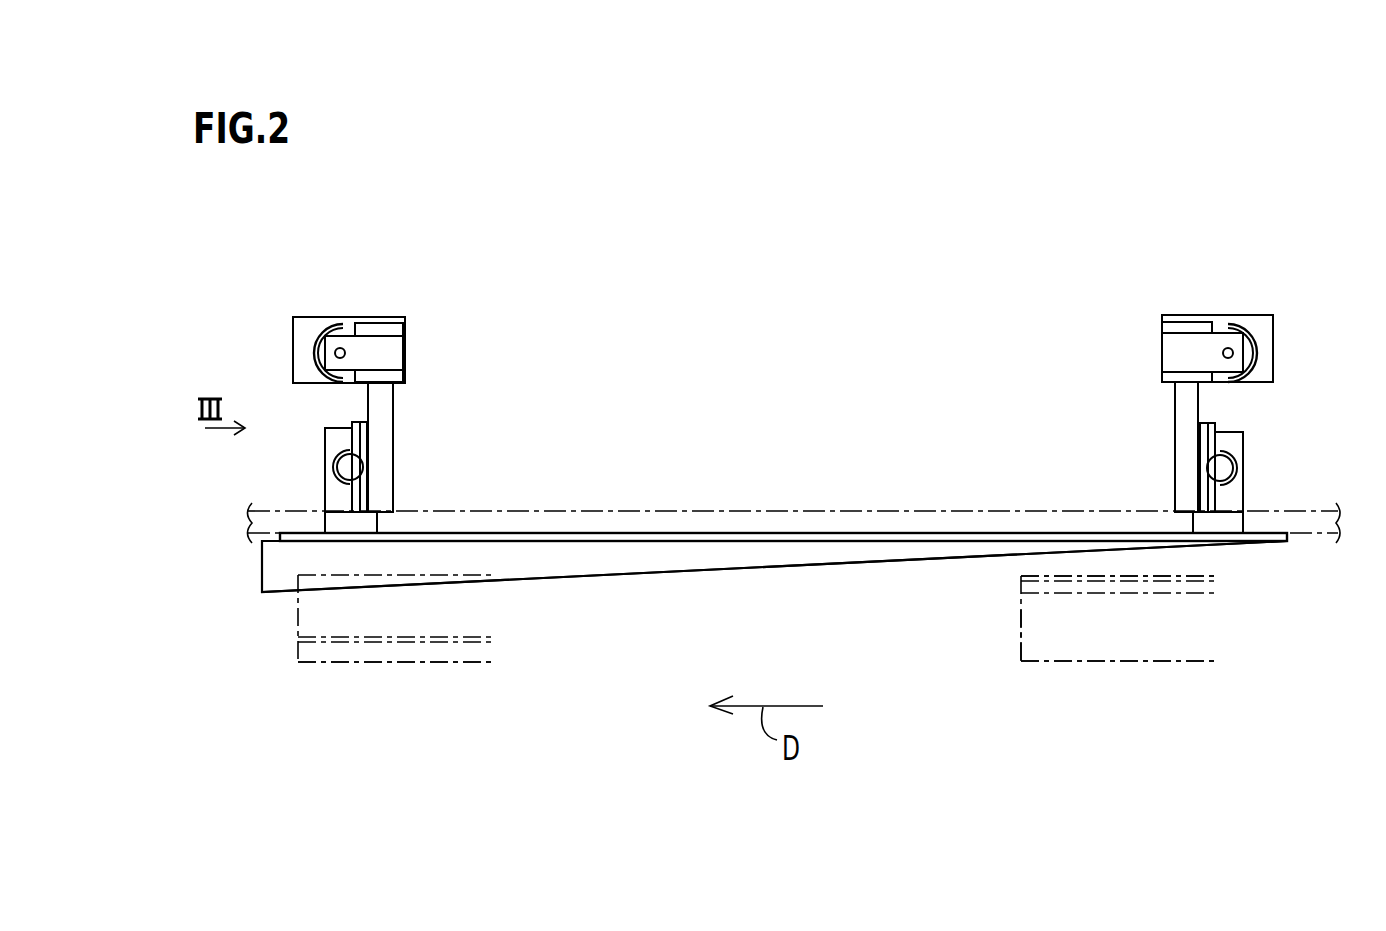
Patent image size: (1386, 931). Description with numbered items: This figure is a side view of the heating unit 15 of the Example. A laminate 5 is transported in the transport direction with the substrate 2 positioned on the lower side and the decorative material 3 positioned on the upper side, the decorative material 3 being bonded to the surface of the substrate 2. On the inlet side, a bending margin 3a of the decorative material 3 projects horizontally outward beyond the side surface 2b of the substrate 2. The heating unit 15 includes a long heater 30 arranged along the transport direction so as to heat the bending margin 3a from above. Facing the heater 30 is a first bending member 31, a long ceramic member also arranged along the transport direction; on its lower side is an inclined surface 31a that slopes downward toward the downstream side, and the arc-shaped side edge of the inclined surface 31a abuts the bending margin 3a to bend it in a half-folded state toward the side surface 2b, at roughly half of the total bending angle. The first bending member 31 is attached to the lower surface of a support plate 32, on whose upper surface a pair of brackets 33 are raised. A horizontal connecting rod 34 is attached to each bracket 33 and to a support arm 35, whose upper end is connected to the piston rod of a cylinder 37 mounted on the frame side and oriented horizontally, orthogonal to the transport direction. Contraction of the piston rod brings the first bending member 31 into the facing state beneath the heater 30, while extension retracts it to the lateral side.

The substrate 2 is at (298, 651).
The side surface of the substrate 2b is at (1067, 622).
The decorative material 3 is at (1203, 577).
The bending margin 3a is at (427, 612).
The laminate 5 is at (343, 663).
The heating unit 15 is at (933, 305).
The heater 30 is at (832, 510).
The first bending member 31 is at (577, 577).
The inclined surface 31a is at (662, 572).
The support plate 32 is at (702, 538).
The bracket 33 is at (325, 431).
The connecting rod 34 is at (343, 467).
The support arm 35 is at (397, 402).
The cylinder 37 is at (316, 338).